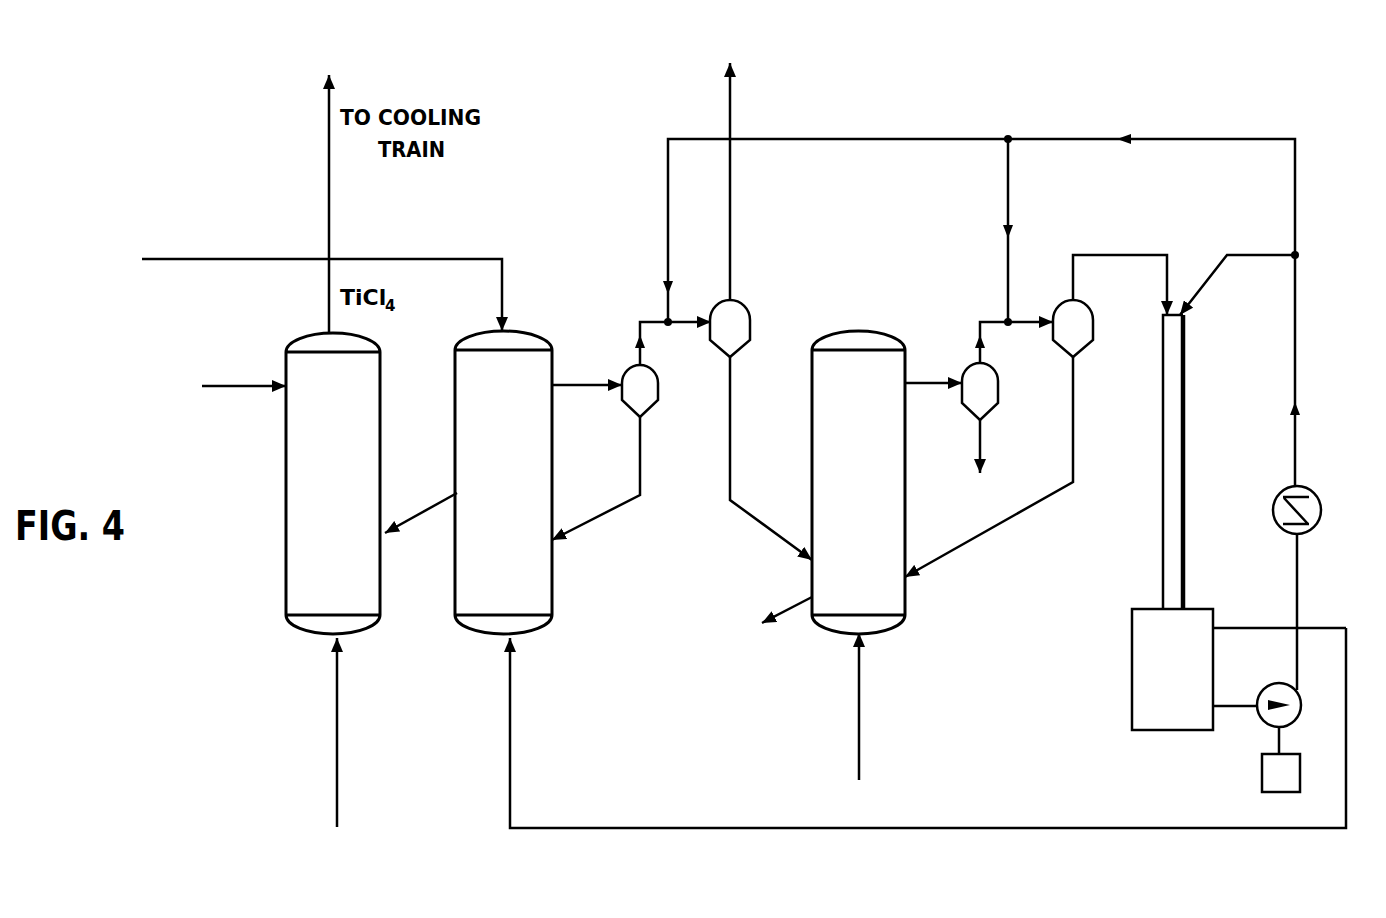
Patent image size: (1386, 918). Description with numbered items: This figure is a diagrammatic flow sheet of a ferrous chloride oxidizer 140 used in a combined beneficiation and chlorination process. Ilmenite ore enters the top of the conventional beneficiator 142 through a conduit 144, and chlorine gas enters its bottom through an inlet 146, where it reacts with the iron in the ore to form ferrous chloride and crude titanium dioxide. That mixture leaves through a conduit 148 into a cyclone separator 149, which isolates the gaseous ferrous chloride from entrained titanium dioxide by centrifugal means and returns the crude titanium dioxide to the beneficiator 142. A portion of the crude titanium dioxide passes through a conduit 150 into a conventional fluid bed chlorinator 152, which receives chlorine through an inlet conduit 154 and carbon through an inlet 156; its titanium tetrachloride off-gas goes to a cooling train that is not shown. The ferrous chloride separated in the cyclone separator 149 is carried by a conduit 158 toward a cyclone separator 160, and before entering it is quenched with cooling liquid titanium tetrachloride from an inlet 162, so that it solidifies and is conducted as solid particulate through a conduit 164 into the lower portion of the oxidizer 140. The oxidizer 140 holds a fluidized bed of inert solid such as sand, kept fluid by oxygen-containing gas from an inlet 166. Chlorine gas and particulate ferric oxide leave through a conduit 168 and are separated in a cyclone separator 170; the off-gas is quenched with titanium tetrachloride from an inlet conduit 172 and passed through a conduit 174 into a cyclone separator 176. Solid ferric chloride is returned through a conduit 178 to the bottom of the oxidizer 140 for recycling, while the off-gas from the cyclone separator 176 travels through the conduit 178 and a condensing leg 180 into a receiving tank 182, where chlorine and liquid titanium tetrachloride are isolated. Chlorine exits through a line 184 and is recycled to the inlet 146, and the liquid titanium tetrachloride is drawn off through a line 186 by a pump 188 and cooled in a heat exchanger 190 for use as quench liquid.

The ferrous chloride oxidizer 140 is at (888, 597).
The conventional beneficiator 142 is at (540, 595).
The conduit 144 is at (502, 279).
The inlet 146 is at (509, 690).
The conduit 148 is at (584, 382).
The cyclone separator 149 is at (645, 388).
The conduit 150 is at (413, 513).
The conventional fluid bed chlorinator 152 is at (294, 503).
The inlet conduit 154 is at (336, 690).
The inlet 156 is at (229, 382).
The conduit 158 is at (685, 318).
The cyclone separator 160 is at (745, 323).
The inlet 162 is at (667, 240).
The conduit 164 is at (735, 457).
The inlet 166 is at (856, 682).
The conduit 168 is at (932, 382).
The cyclone separator 170 is at (988, 387).
The inlet conduit 172 is at (1007, 191).
The conduit 174 is at (1023, 318).
The cyclone separator 176 is at (1088, 322).
The conduit 178 is at (1129, 255).
The condensing leg 180 is at (1170, 494).
The receiving tank 182 is at (1140, 628).
The line 184 is at (1279, 626).
The line 186 is at (1240, 706).
The pump 188 is at (1278, 688).
The heat exchanger 190 is at (1320, 510).